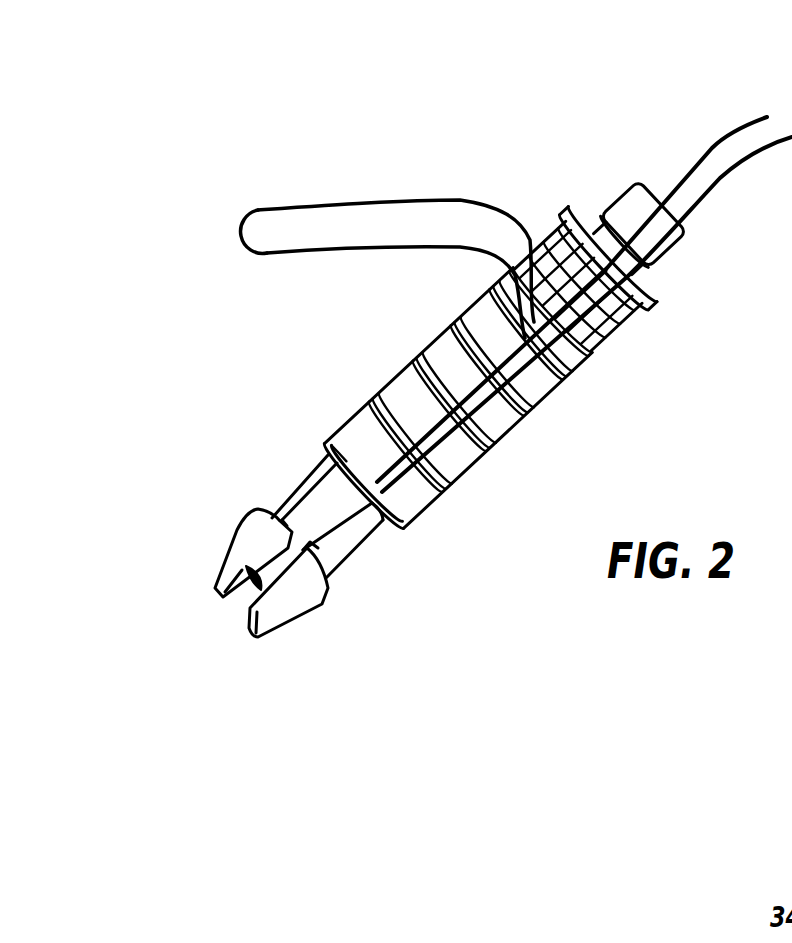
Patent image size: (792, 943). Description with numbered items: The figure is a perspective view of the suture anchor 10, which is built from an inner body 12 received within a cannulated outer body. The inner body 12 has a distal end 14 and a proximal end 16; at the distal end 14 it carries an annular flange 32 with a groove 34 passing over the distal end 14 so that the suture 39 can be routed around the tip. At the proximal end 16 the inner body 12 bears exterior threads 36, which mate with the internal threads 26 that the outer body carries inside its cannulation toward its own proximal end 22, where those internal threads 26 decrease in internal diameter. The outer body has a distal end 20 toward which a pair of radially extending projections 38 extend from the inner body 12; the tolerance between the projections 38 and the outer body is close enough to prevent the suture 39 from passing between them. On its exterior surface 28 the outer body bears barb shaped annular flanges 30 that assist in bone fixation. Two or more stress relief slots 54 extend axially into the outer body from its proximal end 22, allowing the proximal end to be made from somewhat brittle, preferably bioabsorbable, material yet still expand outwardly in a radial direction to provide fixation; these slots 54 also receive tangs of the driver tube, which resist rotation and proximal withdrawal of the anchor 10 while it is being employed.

The suture anchor 10 is at (510, 188).
The inner body 12 is at (298, 465).
The distal end 14 is at (214, 584).
The proximal end 16 is at (425, 334).
The distal end 20 is at (306, 442).
The proximal end 22 is at (651, 283).
The internal threads 26 is at (531, 240).
The exterior surface 28 is at (549, 403).
The barb shaped annular flanges 30 is at (607, 342).
The annular flange 32 is at (320, 608).
The groove 34 is at (232, 590).
The exterior threads 36 is at (565, 222).
The radially extending projections 38 is at (383, 530).
The suture 39 is at (285, 208).
The stress relief slots 54 is at (587, 243).